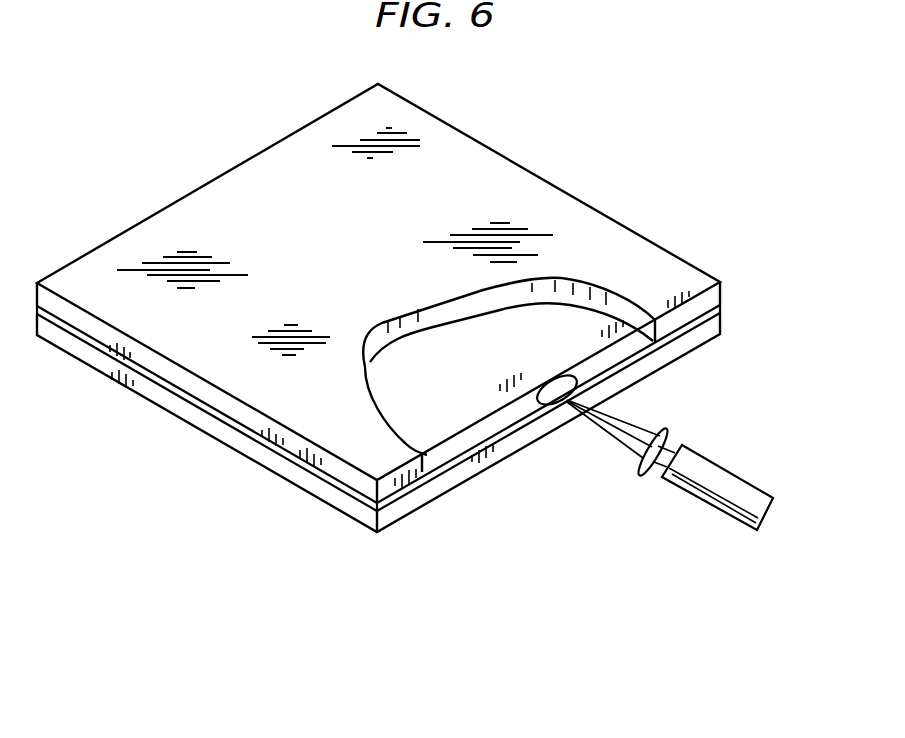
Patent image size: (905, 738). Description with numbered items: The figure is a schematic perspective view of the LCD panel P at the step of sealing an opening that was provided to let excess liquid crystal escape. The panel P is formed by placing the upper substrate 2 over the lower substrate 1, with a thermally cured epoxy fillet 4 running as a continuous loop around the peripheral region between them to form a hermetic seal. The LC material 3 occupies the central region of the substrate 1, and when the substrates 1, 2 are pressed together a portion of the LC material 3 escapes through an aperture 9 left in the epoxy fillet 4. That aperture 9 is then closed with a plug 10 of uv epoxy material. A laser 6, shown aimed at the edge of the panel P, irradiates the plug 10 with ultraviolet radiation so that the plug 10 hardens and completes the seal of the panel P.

The substrate 1 is at (705, 332).
The substrate 2 is at (714, 299).
The LC material 3 is at (455, 362).
The epoxy fillet 4 is at (714, 311).
The laser 6 is at (733, 490).
The aperture 9 is at (538, 379).
The plug 10 is at (565, 404).
The LCD panel P is at (541, 149).